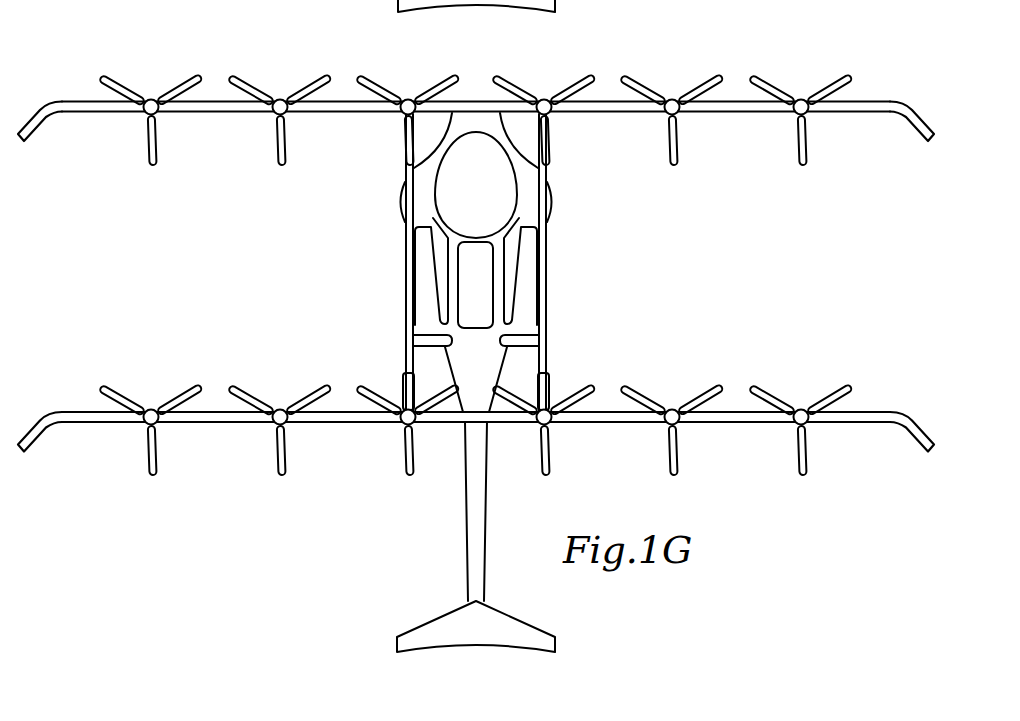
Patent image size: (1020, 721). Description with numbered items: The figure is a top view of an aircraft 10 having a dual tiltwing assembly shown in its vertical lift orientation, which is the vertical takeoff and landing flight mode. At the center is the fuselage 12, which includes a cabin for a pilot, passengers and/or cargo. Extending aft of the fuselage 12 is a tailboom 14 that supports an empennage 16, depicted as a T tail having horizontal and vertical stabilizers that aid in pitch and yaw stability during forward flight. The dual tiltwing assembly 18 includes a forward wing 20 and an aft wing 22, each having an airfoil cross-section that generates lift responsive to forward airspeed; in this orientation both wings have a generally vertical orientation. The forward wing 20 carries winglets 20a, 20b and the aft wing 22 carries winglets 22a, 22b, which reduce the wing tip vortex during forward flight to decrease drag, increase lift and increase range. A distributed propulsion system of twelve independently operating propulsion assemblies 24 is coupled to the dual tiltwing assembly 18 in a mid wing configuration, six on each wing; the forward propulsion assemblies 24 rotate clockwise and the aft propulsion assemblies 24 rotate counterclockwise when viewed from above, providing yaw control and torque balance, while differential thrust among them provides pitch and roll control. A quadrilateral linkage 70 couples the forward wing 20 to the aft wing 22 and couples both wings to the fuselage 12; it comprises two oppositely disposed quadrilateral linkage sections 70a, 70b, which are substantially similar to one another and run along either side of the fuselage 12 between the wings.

The aircraft 10 is at (739, 62).
The fuselage 12 is at (527, 168).
The tailboom 14 is at (468, 491).
The empennage 16 is at (543, 641).
The dual tiltwing assembly 18 is at (207, 118).
The forward wing 20 is at (95, 113).
The winglet 20a is at (38, 124).
The winglet 20b is at (913, 124).
The aft wing 22 is at (108, 423).
The winglet 22a is at (38, 434).
The winglet 22b is at (913, 434).
The propulsion assembly 24 is at (274, 114).
The quadrilateral linkage 70 is at (553, 292).
The quadrilateral linkage section 70a is at (405, 270).
The quadrilateral linkage section 70b is at (547, 270).